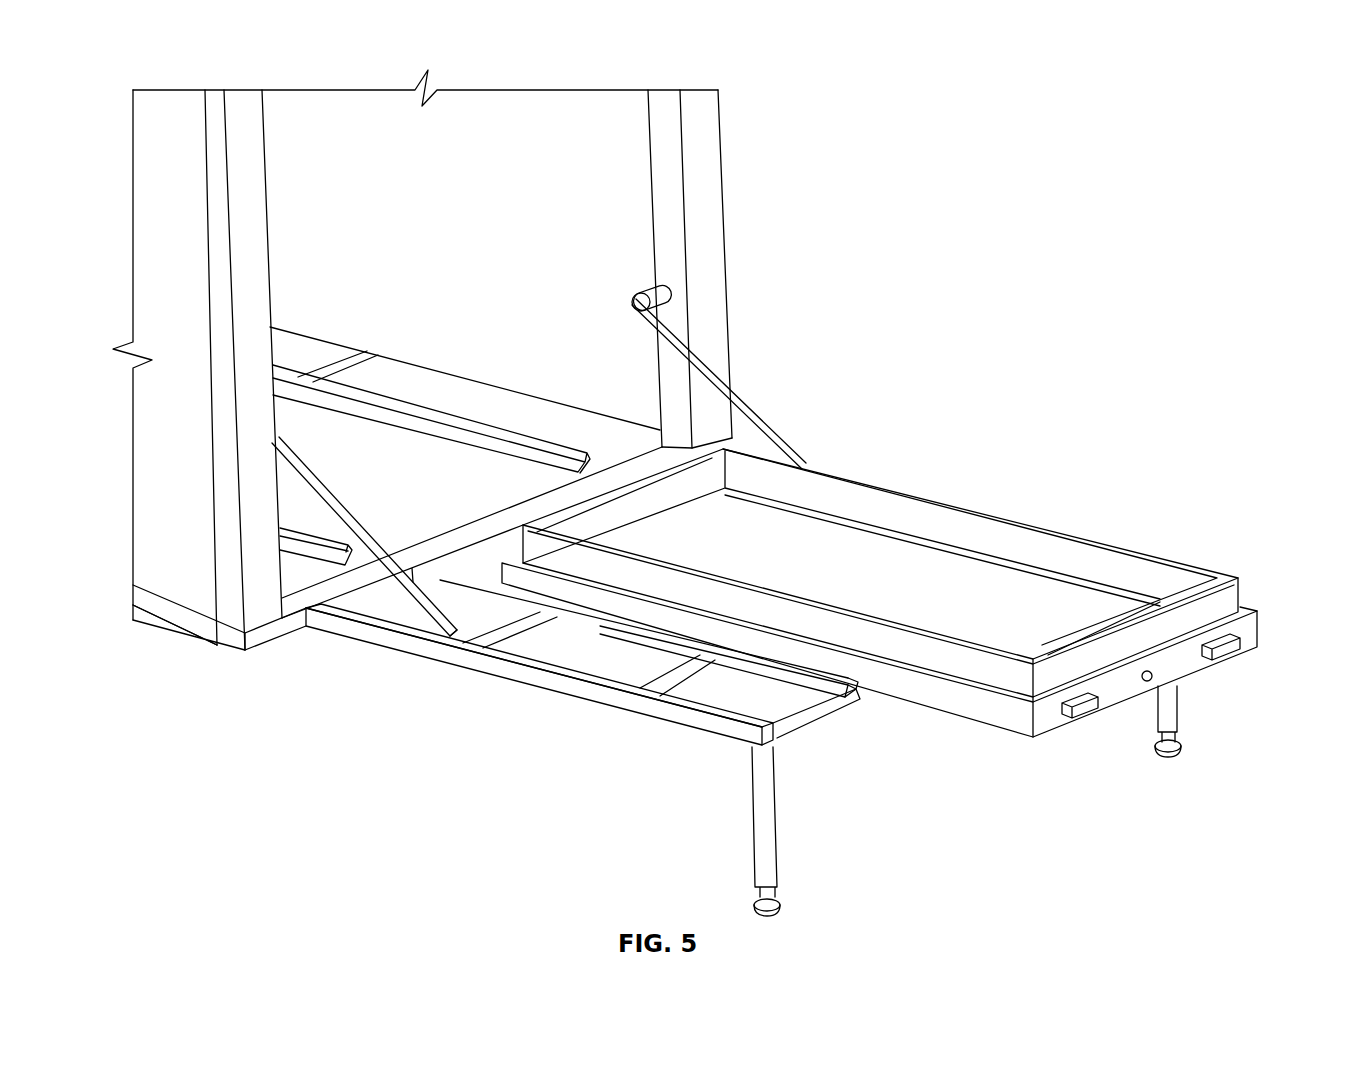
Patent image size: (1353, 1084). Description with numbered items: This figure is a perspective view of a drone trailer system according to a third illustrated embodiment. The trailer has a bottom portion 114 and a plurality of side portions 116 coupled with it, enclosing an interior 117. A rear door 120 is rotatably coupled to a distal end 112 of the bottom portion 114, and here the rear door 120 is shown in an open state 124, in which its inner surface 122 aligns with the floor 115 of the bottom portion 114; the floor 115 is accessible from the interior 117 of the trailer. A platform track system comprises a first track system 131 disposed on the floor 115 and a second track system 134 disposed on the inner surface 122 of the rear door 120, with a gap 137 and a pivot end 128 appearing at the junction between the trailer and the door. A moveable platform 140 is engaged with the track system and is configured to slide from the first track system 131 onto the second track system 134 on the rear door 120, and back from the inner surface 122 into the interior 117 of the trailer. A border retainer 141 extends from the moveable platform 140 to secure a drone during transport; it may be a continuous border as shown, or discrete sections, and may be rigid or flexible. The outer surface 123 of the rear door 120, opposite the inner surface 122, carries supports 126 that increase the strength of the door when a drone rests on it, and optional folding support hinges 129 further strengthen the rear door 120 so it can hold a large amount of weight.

The distal end 112 is at (243, 587).
The bottom portion 114 is at (208, 642).
The floor 115 is at (388, 375).
The plurality of side portions 116 is at (712, 258).
The interior 117 is at (313, 125).
The rear door 120 is at (648, 718).
The inner surface 122 is at (435, 622).
The outer surface 123 is at (733, 740).
The open state 124 is at (415, 806).
The support 126 is at (780, 830).
The pivot end 128 is at (866, 706).
The folding support hinge 129 is at (733, 398).
The first track system 131 is at (435, 410).
The second track system 134 is at (547, 623).
The gap 137 is at (595, 473).
The moveable platform 140 is at (1258, 628).
The border retainer 141 is at (968, 512).